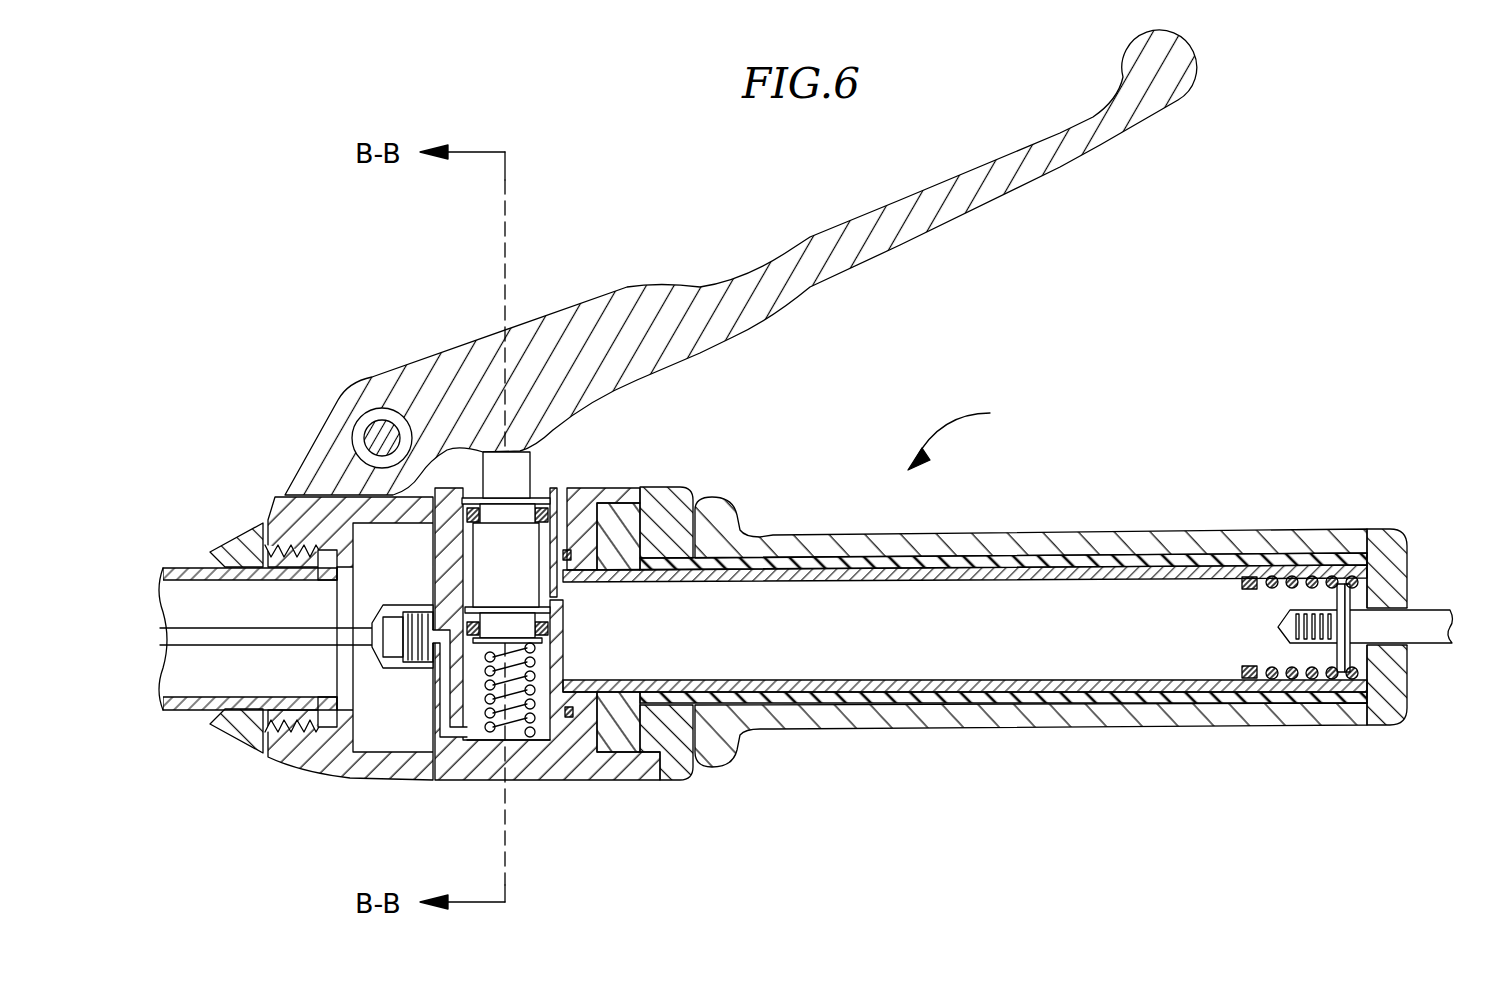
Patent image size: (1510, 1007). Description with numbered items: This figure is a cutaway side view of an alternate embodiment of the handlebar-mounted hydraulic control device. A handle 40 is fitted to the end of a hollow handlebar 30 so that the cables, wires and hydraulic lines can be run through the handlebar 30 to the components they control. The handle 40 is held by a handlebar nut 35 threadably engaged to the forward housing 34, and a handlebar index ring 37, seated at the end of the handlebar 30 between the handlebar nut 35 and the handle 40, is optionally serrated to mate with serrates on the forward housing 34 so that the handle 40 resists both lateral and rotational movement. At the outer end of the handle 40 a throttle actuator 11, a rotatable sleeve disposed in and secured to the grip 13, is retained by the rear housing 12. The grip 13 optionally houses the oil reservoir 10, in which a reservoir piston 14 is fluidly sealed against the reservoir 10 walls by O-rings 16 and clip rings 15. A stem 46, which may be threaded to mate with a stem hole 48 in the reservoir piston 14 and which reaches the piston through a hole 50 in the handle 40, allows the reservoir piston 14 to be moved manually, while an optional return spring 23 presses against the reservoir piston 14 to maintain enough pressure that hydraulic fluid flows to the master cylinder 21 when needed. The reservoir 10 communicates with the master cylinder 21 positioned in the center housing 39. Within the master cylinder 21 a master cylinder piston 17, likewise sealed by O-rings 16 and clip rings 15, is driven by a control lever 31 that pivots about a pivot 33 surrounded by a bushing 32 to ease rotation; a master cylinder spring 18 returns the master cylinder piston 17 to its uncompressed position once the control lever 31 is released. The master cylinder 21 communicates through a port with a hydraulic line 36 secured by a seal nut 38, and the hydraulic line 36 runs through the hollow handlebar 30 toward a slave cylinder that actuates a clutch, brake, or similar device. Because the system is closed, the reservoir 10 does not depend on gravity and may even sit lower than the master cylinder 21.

The oil reservoir 10 is at (585, 775).
The throttle actuator 11 is at (632, 762).
The rear housing 12 is at (690, 770).
The grip 13 is at (780, 735).
The reservoir piston 14 is at (1292, 675).
The clip rings 15 is at (548, 500).
The O-rings 16 is at (1250, 578).
The master cylinder piston 17 is at (535, 452).
The master cylinder spring 18 is at (498, 735).
The master cylinder 21 is at (482, 730).
The return spring 23 is at (1290, 575).
The handlebars 30 is at (190, 712).
The control lever 31 is at (500, 325).
The bushing 32 is at (380, 410).
The pivot 33 is at (365, 425).
The forward housing 34 is at (285, 505).
The handlebar nut 35 is at (230, 547).
The hydraulic line 36 is at (165, 712).
The handlebar index ring 37 is at (312, 712).
The seal nut 38 is at (388, 680).
The center housing 39 is at (527, 782).
The handle 40 is at (967, 435).
The stem 46 is at (1415, 615).
The stem hole 48 is at (1340, 675).
The hole 50 is at (1410, 655).